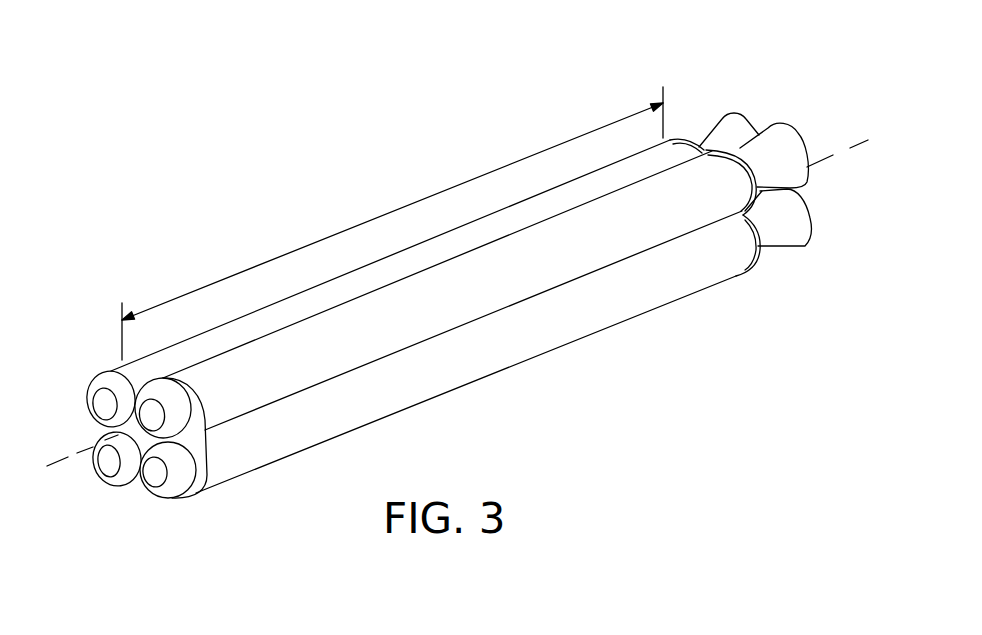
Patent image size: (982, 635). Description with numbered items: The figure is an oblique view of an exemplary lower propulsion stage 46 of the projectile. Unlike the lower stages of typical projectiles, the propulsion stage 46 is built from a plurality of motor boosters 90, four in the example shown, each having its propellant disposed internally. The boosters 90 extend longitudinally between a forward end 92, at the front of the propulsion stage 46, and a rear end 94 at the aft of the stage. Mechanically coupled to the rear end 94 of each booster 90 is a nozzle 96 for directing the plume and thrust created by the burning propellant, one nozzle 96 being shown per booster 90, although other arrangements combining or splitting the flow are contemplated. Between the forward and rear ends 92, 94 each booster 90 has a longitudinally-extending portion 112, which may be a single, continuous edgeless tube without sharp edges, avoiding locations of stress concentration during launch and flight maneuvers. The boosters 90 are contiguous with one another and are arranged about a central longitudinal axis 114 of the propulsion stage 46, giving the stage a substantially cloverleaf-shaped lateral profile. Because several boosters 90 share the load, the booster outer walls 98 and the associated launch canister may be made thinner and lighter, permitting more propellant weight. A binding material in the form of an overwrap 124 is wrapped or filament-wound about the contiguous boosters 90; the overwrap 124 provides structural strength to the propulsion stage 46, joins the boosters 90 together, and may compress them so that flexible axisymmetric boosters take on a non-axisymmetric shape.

The lower propulsion stage 46 is at (438, 147).
The motor booster 90 is at (182, 478).
The forward end of the boosters 92 is at (82, 365).
The rear end of the boosters 94 is at (698, 122).
The nozzle 96 is at (785, 243).
The booster outer wall 98 is at (187, 443).
The longitudinally-extending portion 112 is at (350, 230).
The central longitudinal axis 114 is at (53, 463).
The overwrap 124 is at (205, 445).